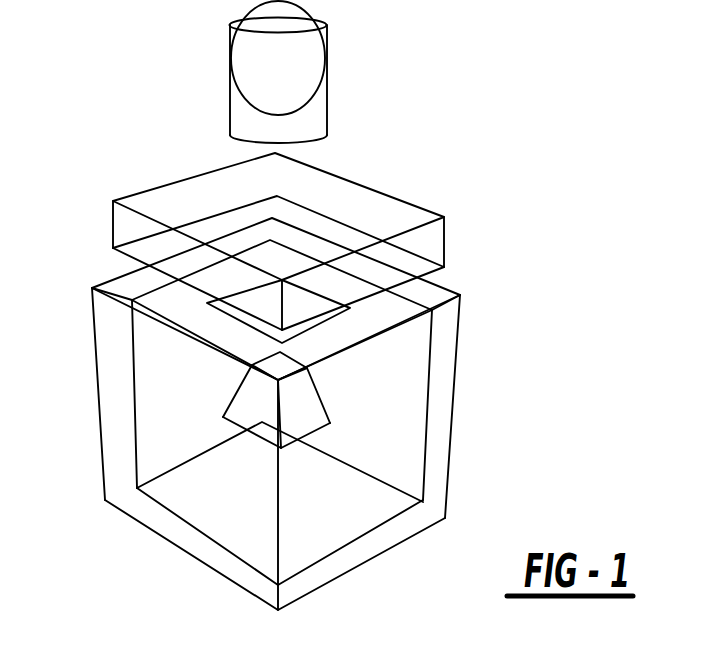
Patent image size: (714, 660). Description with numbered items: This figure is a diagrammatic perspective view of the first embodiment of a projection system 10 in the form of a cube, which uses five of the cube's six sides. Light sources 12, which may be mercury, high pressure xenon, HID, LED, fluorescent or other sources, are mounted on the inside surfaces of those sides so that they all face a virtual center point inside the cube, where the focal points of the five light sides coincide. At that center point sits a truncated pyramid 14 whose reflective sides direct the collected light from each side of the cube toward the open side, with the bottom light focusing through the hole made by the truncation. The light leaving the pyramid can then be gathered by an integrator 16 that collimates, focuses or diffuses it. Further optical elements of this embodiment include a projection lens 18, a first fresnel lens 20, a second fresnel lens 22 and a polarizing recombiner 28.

The projection system 10 is at (170, 572).
The light sources 12 is at (92, 291).
The truncated pyramid 14 is at (233, 426).
The integrator 16 is at (172, 298).
The projection lens 18 is at (329, 33).
The first fresnel lens 20 is at (113, 223).
The second fresnel lens 22 is at (320, 562).
The polarizing recombiner 28 is at (237, 320).